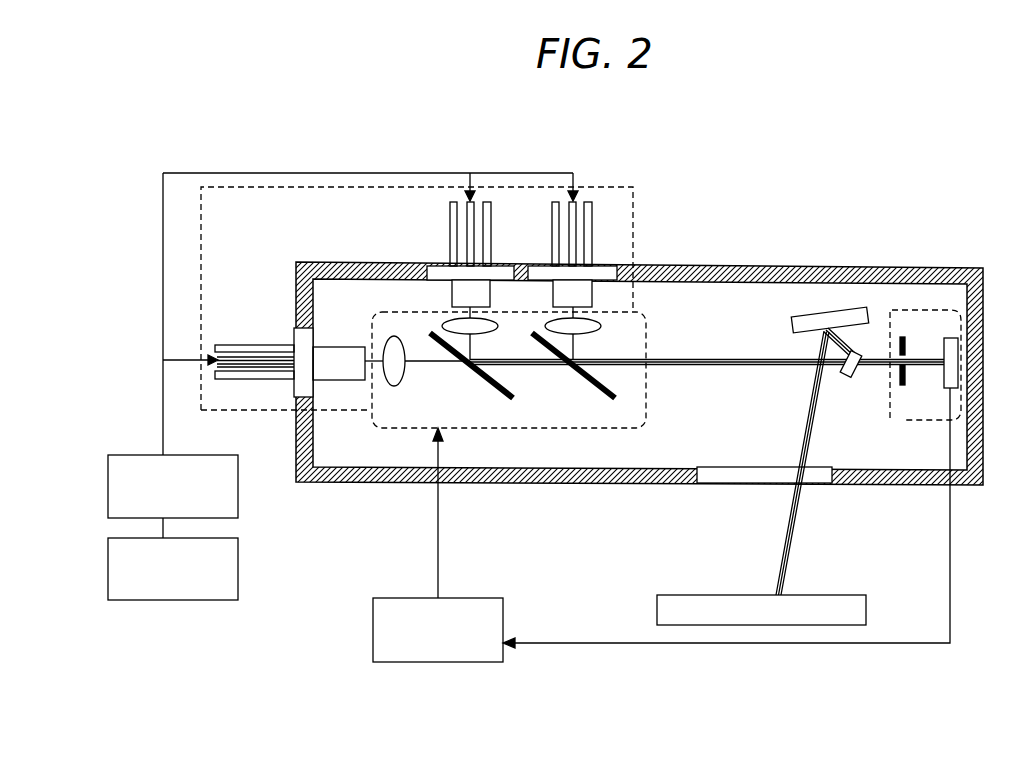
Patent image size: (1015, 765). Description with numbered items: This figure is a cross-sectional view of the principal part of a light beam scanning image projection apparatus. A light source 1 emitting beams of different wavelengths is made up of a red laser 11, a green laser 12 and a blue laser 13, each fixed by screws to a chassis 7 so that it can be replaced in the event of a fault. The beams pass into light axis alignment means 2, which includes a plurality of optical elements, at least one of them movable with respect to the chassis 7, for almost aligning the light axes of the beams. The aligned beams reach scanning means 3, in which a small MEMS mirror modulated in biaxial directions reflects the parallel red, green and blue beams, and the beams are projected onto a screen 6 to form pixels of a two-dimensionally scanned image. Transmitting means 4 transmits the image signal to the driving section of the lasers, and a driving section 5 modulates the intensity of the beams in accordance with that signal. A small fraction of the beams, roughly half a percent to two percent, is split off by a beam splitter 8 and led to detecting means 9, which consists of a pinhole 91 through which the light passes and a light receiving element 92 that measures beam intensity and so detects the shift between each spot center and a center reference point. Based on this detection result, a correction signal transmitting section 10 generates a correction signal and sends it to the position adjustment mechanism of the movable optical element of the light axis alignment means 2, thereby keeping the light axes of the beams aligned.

The light source 1 is at (634, 192).
The light axis alignment means 2 is at (646, 395).
The scanning means 3 is at (792, 314).
The transmitting means 4 is at (237, 588).
The driving section 5 is at (237, 508).
The screen 6 is at (673, 595).
The chassis 7 is at (912, 266).
The beam splitter 8 is at (845, 376).
The detecting means 9 is at (873, 411).
The correction signal transmitting section 10 is at (478, 598).
The red laser 11 is at (447, 272).
The green laser 12 is at (292, 343).
The blue laser 13 is at (606, 267).
The pinhole 91 is at (902, 337).
The light receiving element 92 is at (950, 373).